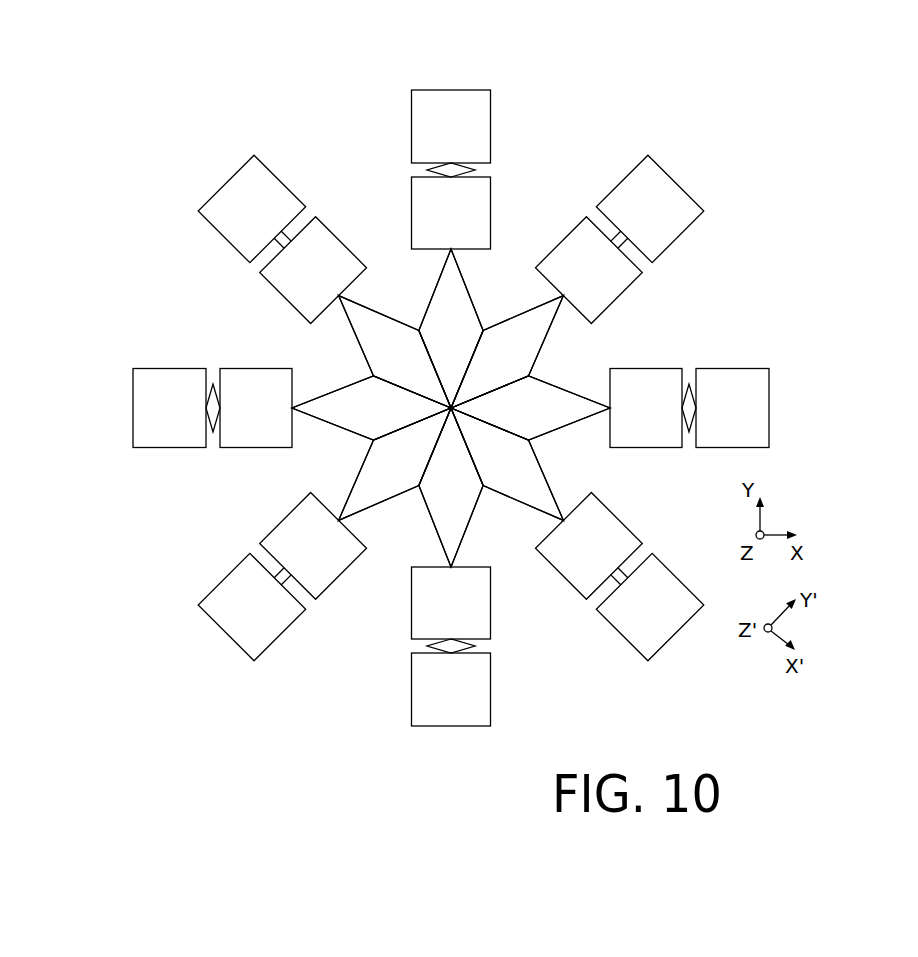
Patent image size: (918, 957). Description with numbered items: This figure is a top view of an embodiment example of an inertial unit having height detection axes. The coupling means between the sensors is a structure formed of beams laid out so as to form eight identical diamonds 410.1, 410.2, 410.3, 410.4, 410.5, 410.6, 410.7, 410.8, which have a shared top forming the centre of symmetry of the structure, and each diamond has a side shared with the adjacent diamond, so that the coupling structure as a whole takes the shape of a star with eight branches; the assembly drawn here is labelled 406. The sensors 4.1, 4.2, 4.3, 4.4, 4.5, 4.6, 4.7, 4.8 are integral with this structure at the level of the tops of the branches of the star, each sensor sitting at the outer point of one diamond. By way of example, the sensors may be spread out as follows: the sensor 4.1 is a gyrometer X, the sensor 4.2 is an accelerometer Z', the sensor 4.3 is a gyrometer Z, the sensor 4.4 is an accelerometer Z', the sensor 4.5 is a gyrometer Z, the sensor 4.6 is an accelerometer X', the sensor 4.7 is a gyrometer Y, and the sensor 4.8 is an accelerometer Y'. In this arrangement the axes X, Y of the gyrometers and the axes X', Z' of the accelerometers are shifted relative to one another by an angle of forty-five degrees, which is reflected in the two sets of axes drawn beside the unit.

The antenna arrangement 406 is at (196, 532).
The sensor 4.1 is at (452, 75).
The sensor 4.2 is at (693, 169).
The sensor 4.3 is at (793, 412).
The sensor 4.4 is at (693, 653).
The sensor 4.5 is at (450, 749).
The sensor 4.6 is at (210, 650).
The sensor 4.7 is at (112, 405).
The sensor 4.8 is at (212, 167).
The diamond 410.1 is at (470, 297).
The diamond 410.2 is at (547, 347).
The diamond 410.3 is at (562, 432).
The diamond 410.4 is at (513, 505).
The diamond 410.5 is at (432, 519).
The diamond 410.6 is at (360, 467).
The diamond 410.7 is at (335, 388).
The diamond 410.8 is at (385, 313).